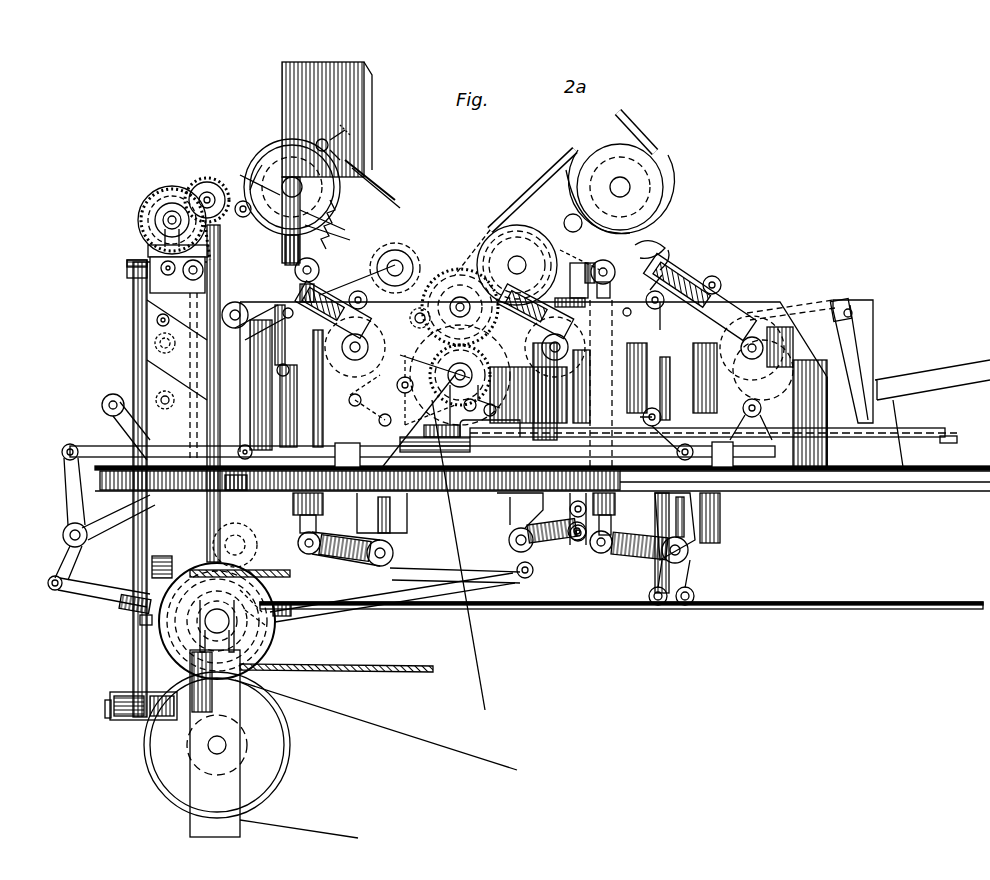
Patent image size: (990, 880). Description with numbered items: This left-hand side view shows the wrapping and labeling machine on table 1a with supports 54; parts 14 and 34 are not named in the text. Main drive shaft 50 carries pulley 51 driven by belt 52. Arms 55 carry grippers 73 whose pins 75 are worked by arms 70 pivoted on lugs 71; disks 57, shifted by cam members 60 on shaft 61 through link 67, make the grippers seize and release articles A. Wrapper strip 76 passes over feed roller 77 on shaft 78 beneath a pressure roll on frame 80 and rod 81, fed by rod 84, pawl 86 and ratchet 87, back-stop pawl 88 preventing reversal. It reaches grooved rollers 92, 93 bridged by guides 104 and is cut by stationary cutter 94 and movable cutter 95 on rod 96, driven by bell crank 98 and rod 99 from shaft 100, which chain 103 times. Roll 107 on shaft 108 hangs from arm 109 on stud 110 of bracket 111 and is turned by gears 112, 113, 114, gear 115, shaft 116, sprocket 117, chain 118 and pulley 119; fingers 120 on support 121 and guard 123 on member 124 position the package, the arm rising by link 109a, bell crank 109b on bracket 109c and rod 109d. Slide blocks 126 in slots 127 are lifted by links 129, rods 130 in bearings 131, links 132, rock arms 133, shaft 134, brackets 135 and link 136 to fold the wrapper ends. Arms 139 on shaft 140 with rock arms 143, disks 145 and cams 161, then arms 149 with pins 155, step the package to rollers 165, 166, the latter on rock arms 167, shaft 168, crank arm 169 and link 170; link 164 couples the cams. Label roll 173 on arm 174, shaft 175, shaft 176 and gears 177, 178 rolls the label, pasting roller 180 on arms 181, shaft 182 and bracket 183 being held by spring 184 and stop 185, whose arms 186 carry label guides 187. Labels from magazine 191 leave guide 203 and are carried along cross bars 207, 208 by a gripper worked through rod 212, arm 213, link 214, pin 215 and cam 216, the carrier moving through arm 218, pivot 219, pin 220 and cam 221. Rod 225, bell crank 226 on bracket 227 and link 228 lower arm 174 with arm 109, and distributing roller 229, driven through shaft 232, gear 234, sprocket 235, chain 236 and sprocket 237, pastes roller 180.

The frame 1a is at (925, 480).
The table 14 is at (932, 413).
The standard 34 is at (857, 350).
The arm 50 is at (222, 752).
The wheel 51 is at (282, 760).
The rod 52 is at (383, 728).
The bar 54 is at (770, 305).
The link 55 is at (742, 300).
The pivot 57 is at (773, 408).
The cam 60 is at (798, 350).
The roller 61 is at (750, 410).
The rod 67 is at (945, 433).
The lever 70 is at (690, 300).
The pivot 71 is at (715, 272).
The arm 73 is at (661, 270).
The roller 75 is at (250, 248).
The rod 76 is at (475, 630).
The rod 77 is at (459, 516).
The link 78 is at (479, 390).
The pawl 80 is at (340, 329).
The pivot 81 is at (344, 294).
The bracket 84 is at (855, 440).
The roller 86 is at (491, 390).
The link 87 is at (425, 412).
The pivot 88 is at (412, 390).
The pivot 92 is at (628, 278).
The link 93 is at (675, 290).
The arm 94 is at (603, 328).
The roller 95 is at (607, 268).
The link 96 is at (580, 249).
The lever 98 is at (541, 535).
The rod 99 is at (478, 575).
The cam wheel 100 is at (210, 630).
The rack 103 is at (410, 670).
The link 104 is at (722, 320).
The guard 107 is at (660, 180).
The wheel 108 is at (625, 185).
The arm 109 is at (531, 191).
The roller 109a is at (615, 519).
The lever 109b is at (632, 560).
The bracket 109c is at (700, 518).
The rod 109d is at (850, 600).
The wheel 110 is at (515, 262).
The hub 111 is at (459, 235).
The arm 112 is at (484, 185).
The bar 113 is at (515, 211).
The guide 114 is at (590, 160).
The lever 115 is at (460, 300).
The gear 116 is at (401, 332).
The gear 117 is at (482, 342).
The bracket 118 is at (265, 545).
The rack 119 is at (278, 628).
The link 120 is at (645, 280).
The bar 121 is at (705, 122).
The cam 123 is at (665, 242).
The link 124 is at (565, 160).
The link 126 is at (648, 412).
The pivot 127 is at (645, 324).
The roller 129 is at (285, 455).
The bar 130 is at (762, 455).
The block 131 is at (340, 460).
The lever 132 is at (84, 445).
The lever 133 is at (62, 505).
The pivot 134 is at (62, 538).
The link 135 is at (113, 543).
The link 136 is at (128, 608).
The pawl 139 is at (541, 330).
The arm 140 is at (615, 370).
The link 143 is at (534, 386).
The pivot 145 is at (425, 331).
The link 149 is at (341, 396).
The pivot 155 is at (345, 357).
The roller 161 is at (634, 425).
The bar 164 is at (415, 479).
The post 165 is at (283, 240).
The arm 166 is at (294, 358).
The pivot 167 is at (150, 370).
The pivot 168 is at (150, 395).
The link 169 is at (130, 418).
The link 170 is at (165, 525).
The arm 173 is at (262, 165).
The lever 174 is at (350, 180).
The gear 175 is at (395, 265).
The wheel 176 is at (292, 185).
The bracket 177 is at (250, 175).
The link 178 is at (350, 185).
The arm 180 is at (235, 212).
The pivot 181 is at (238, 205).
The pawl 182 is at (318, 135).
The spring 183 is at (355, 140).
The pivot 184 is at (352, 142).
The link 185 is at (402, 246).
The lever 186 is at (360, 165).
The link 187 is at (357, 279).
The hopper 191 is at (284, 95).
The roller 203 is at (295, 270).
The bracket 207 is at (130, 288).
The pivot 208 is at (160, 320).
The link 212 is at (190, 275).
The pivot 213 is at (190, 282).
The column 214 is at (225, 400).
The link 215 is at (150, 623).
The bracket 216 is at (185, 645).
The gear 218 is at (135, 565).
The stud 219 is at (107, 720).
The pawl 220 is at (150, 622).
The gear 221 is at (150, 572).
The lever 225 is at (345, 536).
The rod 226 is at (392, 590).
The bracket 227 is at (400, 522).
The roller 228 is at (610, 598).
The gear 229 is at (195, 182).
The wheel 232 is at (170, 215).
The arm 234 is at (195, 180).
The wheel 235 is at (155, 230).
The hub 236 is at (148, 238).
The cam 237 is at (275, 532).
The article A is at (877, 281).